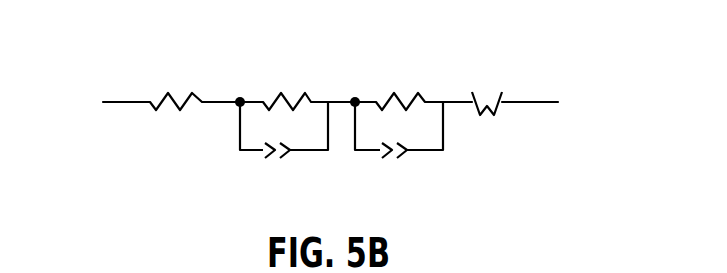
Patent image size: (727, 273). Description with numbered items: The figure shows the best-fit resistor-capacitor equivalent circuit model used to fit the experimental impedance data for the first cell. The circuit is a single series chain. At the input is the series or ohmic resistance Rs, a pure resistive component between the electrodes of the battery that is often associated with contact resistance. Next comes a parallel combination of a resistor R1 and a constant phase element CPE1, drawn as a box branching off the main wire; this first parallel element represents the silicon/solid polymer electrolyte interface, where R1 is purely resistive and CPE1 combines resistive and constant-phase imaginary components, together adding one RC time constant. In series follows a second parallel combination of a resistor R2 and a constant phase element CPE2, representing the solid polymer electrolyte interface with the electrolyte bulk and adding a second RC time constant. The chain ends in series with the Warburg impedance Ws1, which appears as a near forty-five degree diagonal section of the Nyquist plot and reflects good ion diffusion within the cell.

The series resistance Rs is at (176, 84).
The resistor R1 is at (287, 84).
The constant phase element CPE1 is at (284, 130).
The resistor R2 is at (400, 84).
The constant phase element CPE2 is at (399, 130).
The Warburg impedance Ws1 is at (488, 90).